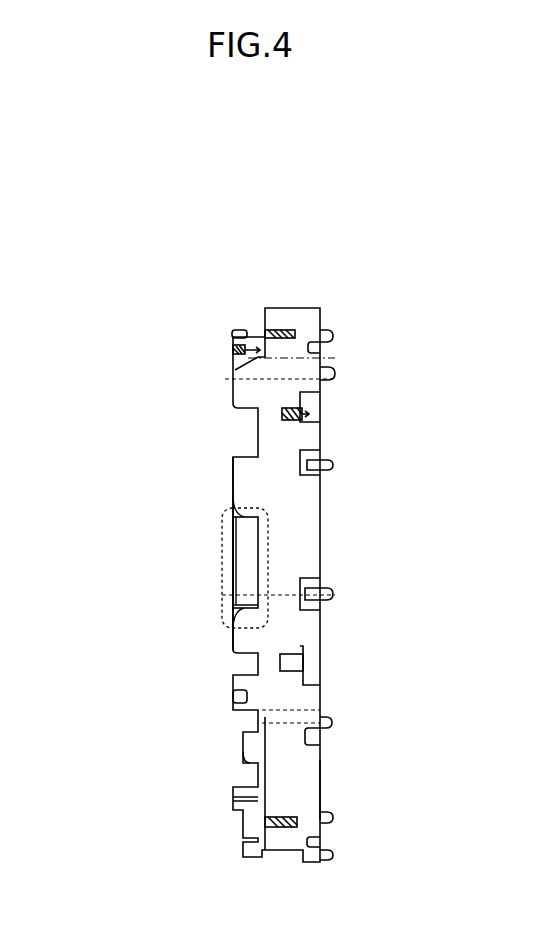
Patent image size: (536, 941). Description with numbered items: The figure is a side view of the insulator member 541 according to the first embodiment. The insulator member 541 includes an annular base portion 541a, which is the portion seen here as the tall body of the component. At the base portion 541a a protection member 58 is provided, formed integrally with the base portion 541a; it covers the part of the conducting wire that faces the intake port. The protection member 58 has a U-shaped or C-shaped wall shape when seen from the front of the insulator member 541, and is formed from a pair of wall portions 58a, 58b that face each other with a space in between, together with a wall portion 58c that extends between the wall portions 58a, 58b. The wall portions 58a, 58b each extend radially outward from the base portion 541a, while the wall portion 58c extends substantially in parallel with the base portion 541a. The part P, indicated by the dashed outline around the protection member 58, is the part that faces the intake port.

The insulator member 541 is at (273, 288).
The base portion 541a is at (312, 790).
The protection member 58 is at (160, 566).
The wall portion 58a is at (235, 492).
The wall portion 58b is at (233, 632).
The wall portion 58c is at (235, 536).
The part P is at (223, 595).